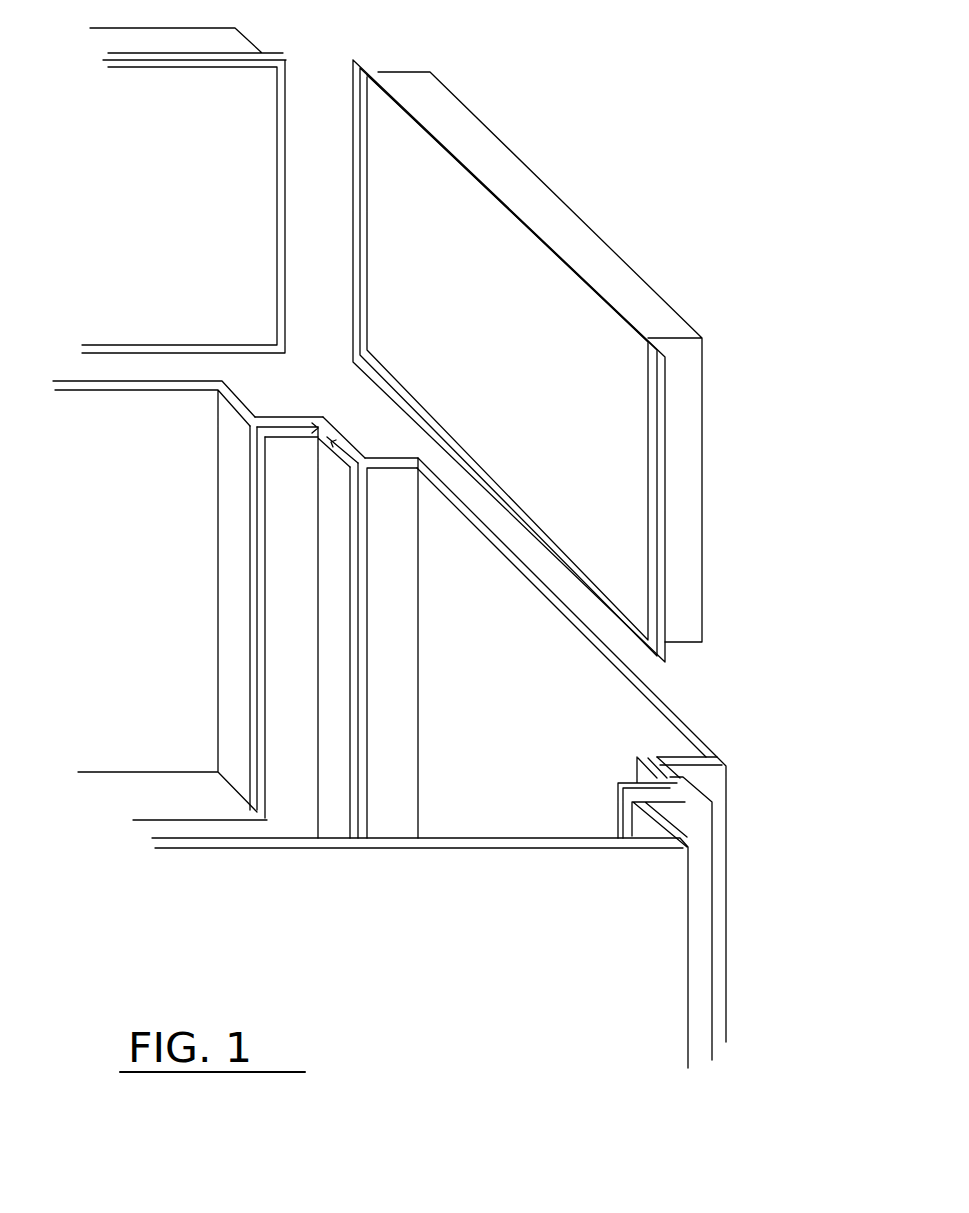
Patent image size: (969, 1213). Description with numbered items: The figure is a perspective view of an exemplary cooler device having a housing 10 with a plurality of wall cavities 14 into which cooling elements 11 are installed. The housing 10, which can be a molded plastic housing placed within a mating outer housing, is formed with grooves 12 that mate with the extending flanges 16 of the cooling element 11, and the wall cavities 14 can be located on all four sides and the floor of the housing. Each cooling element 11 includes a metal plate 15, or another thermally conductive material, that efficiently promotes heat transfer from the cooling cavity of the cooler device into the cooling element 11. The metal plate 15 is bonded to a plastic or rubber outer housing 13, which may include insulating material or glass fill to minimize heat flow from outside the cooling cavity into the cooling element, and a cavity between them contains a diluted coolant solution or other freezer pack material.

The housing 10 is at (642, 891).
The cooling element 11 is at (566, 226).
The grooves 12 is at (357, 489).
The outer housing 13 is at (657, 304).
The wall cavities 14 is at (463, 694).
The metal plate 15 is at (620, 509).
The extending flanges 16 is at (679, 415).